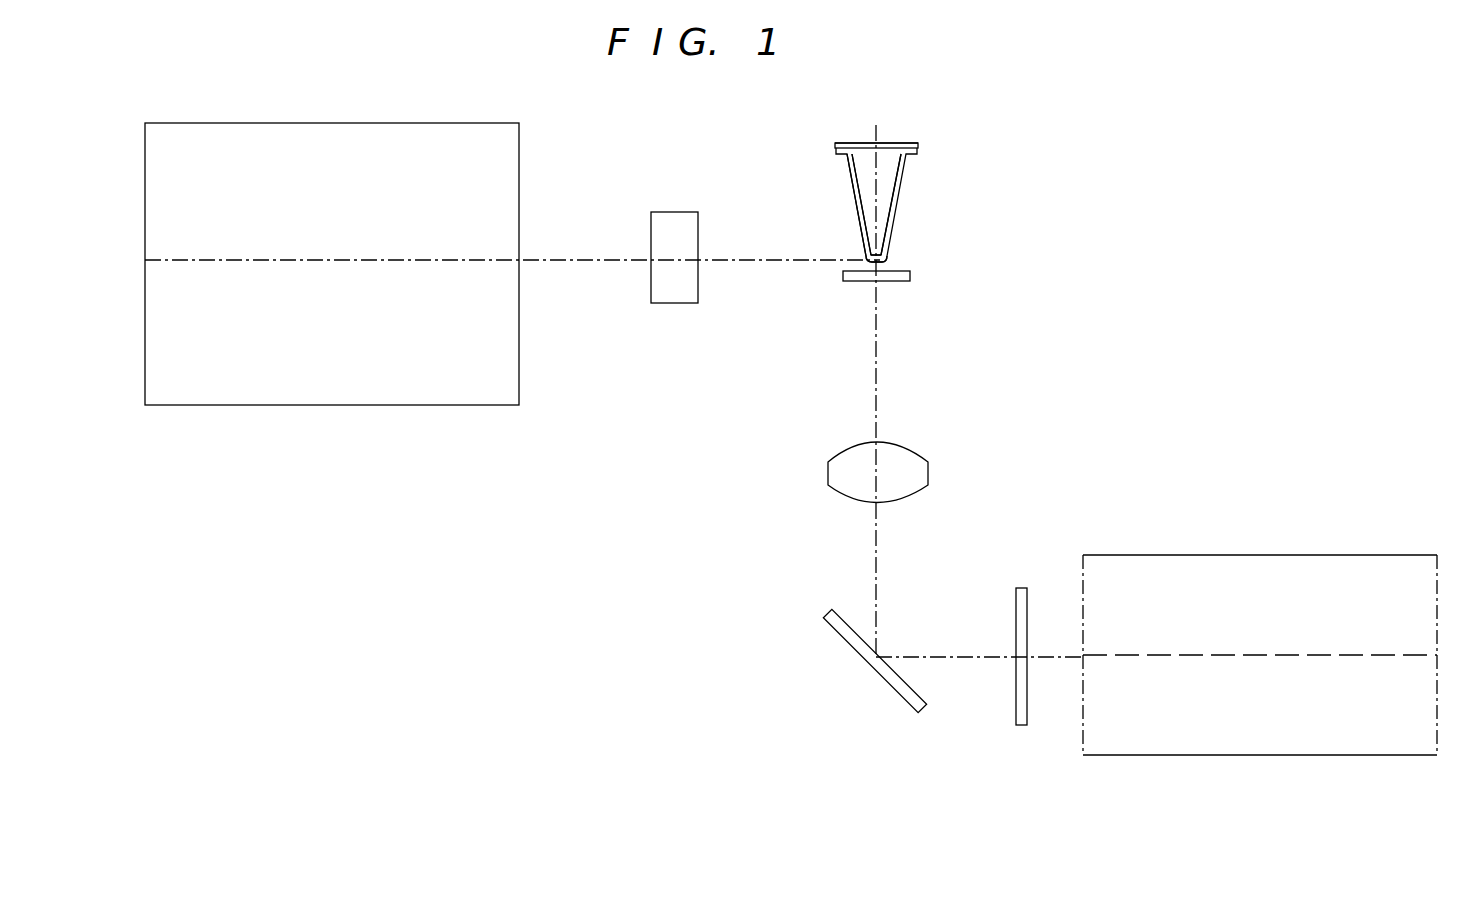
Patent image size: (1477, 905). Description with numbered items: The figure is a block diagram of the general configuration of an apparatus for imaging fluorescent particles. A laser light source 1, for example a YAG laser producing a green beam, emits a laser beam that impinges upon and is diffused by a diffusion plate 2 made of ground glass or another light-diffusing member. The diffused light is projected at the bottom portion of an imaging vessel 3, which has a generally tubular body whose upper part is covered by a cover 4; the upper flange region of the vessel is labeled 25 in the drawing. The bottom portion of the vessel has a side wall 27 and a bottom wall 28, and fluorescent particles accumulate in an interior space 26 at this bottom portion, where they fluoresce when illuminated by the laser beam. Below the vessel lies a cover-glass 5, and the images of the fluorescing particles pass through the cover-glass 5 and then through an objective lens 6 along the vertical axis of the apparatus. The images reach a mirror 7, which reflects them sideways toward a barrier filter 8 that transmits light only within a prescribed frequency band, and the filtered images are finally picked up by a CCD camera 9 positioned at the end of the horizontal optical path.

The laser light source 1 is at (519, 363).
The diffusion plate 2 is at (673, 208).
The imaging vessel 3 is at (905, 172).
The cover 4 is at (885, 141).
The cover-glass 5 is at (910, 276).
The objective lens 6 is at (900, 443).
The mirror 7 is at (882, 683).
The barrier filter 8 is at (1027, 600).
The CCD camera 9 is at (1175, 555).
The flange 25 is at (918, 158).
The interior space 26 is at (888, 200).
The side wall 27 is at (852, 210).
The bottom wall 28 is at (876, 263).